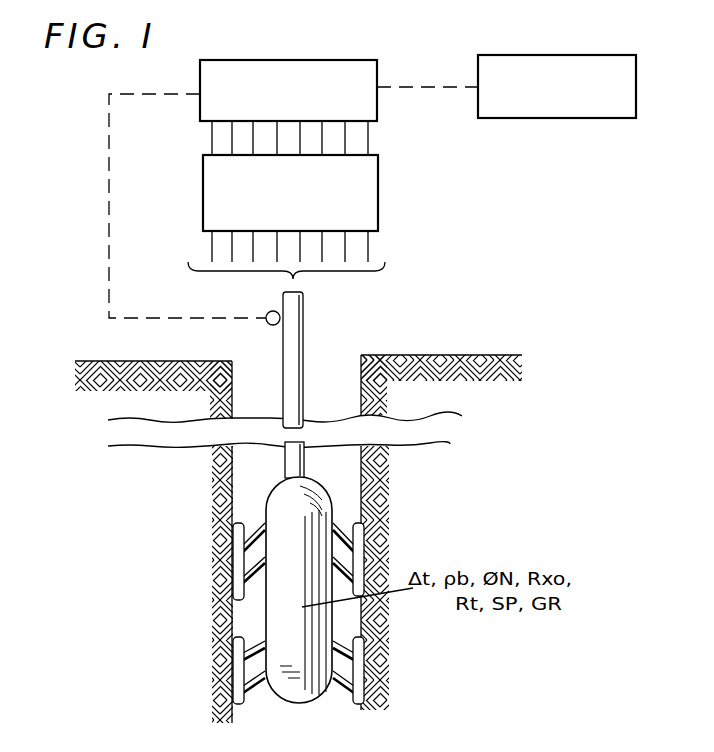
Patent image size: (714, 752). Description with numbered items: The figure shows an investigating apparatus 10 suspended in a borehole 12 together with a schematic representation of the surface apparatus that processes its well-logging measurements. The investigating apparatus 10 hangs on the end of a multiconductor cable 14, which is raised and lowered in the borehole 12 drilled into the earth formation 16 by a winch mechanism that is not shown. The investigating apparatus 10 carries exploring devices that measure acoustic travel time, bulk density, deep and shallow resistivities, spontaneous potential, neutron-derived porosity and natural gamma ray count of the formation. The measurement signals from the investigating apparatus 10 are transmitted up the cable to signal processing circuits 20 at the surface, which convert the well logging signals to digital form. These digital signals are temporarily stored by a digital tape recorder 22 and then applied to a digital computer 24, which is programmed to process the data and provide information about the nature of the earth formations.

The investigating apparatus 10 is at (317, 692).
The borehole 12 is at (343, 483).
The multiconductor cable 14 is at (305, 326).
The earth formation 16 is at (170, 540).
The signal processing circuits 20 is at (380, 198).
The digital tape recorder 22 is at (346, 58).
The digital computer 24 is at (578, 55).